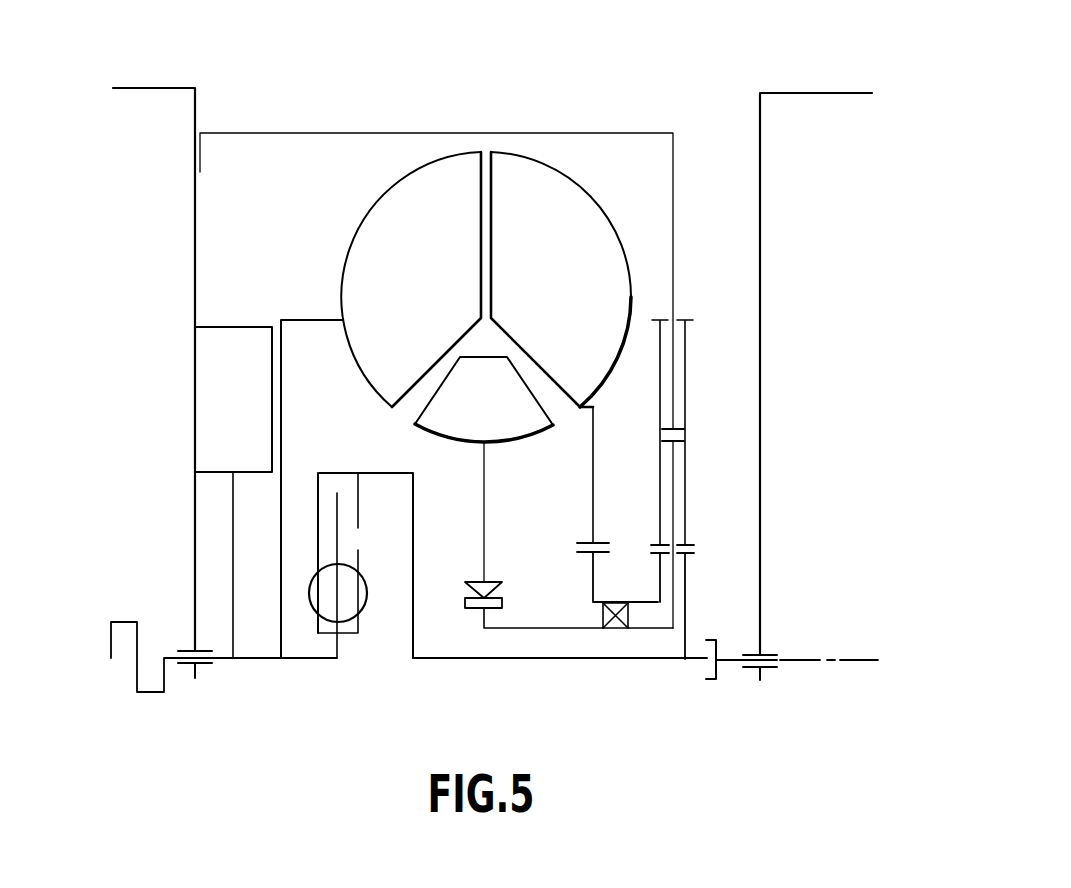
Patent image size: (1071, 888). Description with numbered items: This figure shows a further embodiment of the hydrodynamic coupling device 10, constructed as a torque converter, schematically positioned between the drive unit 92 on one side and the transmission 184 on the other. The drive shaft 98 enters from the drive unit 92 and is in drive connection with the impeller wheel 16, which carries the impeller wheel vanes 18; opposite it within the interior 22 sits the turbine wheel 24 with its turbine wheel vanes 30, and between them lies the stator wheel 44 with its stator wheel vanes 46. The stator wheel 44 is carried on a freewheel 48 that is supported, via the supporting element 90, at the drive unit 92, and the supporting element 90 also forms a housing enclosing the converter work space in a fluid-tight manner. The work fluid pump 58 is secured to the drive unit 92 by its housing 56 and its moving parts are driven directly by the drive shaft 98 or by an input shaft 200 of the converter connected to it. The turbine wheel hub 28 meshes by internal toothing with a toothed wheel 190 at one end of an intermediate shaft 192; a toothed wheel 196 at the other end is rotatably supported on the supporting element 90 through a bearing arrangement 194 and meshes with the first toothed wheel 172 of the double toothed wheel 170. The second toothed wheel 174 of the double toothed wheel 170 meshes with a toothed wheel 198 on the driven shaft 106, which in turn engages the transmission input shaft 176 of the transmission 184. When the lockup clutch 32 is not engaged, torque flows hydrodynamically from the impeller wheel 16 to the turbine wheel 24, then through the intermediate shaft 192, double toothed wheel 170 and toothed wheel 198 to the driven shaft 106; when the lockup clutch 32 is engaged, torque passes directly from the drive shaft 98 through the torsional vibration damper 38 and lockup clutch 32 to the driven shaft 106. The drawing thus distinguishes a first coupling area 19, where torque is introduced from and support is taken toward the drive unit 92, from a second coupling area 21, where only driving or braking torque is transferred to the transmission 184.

The hydrodynamic coupling device 10 is at (548, 98).
The first coupling area 19 is at (260, 95).
The drive unit 92 is at (155, 88).
The impeller wheel 16 is at (398, 173).
The supporting element 90 is at (583, 135).
The turbine wheel 24 is at (600, 178).
The transmission 184 is at (820, 93).
The impeller wheel vanes 18 is at (410, 266).
The turbine wheel vanes 30 is at (534, 266).
The stator wheel vanes 46 is at (469, 406).
The interior 22 is at (480, 343).
The stator wheel 44 is at (527, 448).
The housing 56 is at (222, 327).
The work fluid pump 58 is at (185, 418).
The second toothed wheel 174 is at (687, 347).
The double toothed wheel 170 is at (702, 413).
The turbine wheel hub 28 is at (593, 497).
The first toothed wheel 172 is at (660, 510).
The toothed wheel 196 is at (660, 583).
The toothed wheel 198 is at (685, 632).
The toothed wheel 190 is at (590, 566).
The bearing arrangement 194 is at (600, 615).
The driven shaft 106 is at (632, 658).
The intermediate shaft 192 is at (633, 603).
The transmission input shaft 176 is at (723, 662).
The second coupling area 21 is at (703, 687).
The input shaft 200 is at (253, 658).
The lockup clutch 32 is at (313, 503).
The torsional vibration damper 38 is at (358, 640).
The freewheel 48 is at (472, 615).
The drive shaft 98 is at (148, 693).